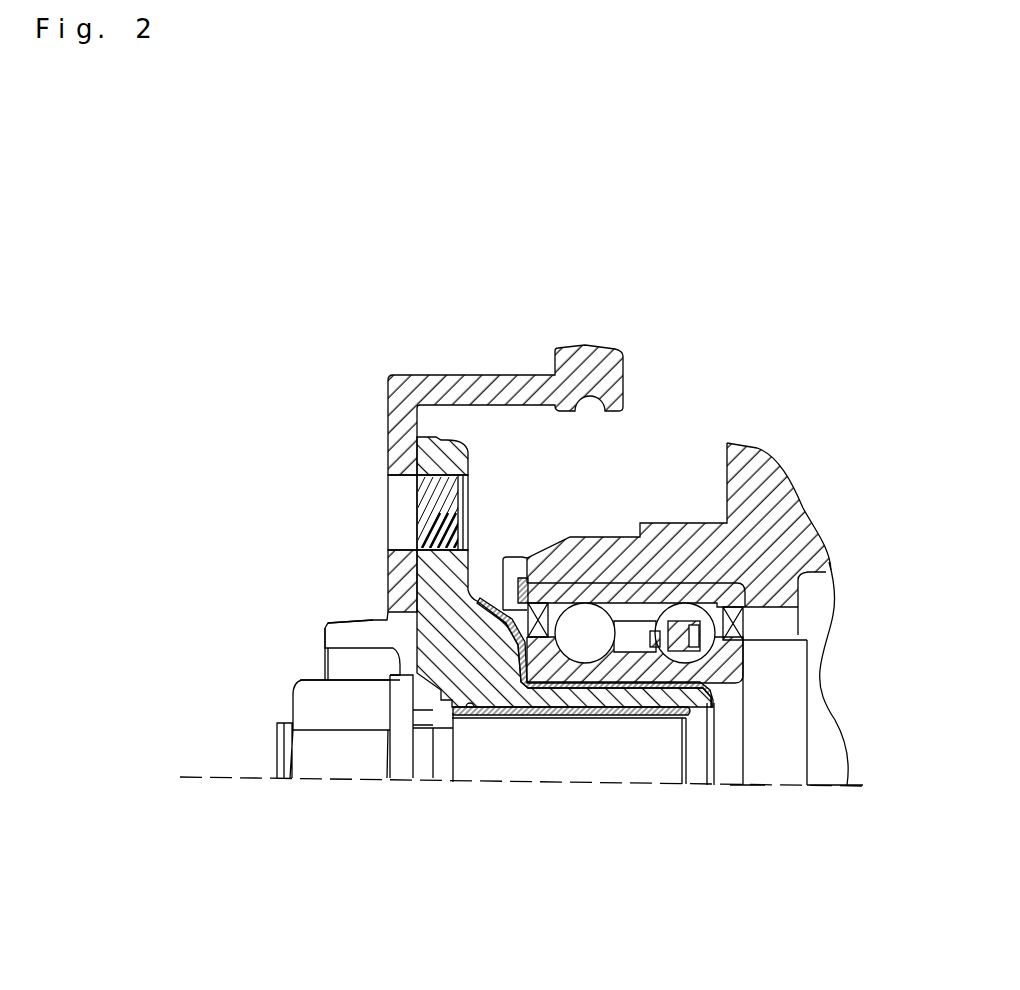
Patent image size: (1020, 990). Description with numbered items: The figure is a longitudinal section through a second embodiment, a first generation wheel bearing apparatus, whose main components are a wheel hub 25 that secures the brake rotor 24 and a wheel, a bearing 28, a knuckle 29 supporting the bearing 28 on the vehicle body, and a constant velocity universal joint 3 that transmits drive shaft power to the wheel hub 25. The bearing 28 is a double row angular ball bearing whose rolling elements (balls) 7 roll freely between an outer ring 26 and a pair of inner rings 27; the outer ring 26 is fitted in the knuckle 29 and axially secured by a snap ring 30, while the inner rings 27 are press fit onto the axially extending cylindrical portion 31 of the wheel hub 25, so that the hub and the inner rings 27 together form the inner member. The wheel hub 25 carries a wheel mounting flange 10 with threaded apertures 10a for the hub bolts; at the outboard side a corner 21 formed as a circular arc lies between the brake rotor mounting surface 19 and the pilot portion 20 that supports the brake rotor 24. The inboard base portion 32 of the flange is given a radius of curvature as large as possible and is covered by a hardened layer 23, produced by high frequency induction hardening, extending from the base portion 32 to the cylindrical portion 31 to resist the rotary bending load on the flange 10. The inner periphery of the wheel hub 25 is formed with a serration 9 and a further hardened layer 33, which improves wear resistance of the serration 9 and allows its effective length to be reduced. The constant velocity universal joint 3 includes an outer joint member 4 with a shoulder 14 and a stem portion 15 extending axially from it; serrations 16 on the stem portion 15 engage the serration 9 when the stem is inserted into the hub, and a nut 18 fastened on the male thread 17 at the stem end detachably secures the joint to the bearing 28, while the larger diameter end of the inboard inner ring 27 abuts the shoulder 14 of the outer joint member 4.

The constant velocity universal joint 3 is at (818, 645).
The outer joint member 4 is at (769, 717).
The rolling elements (balls) 7 is at (583, 652).
The serration 9 is at (517, 720).
The wheel mounting flange 10 is at (432, 447).
The threaded apertures 10a is at (413, 493).
The shoulder 14 is at (775, 753).
The stem portion 15 is at (485, 757).
The serrations (splines) 16 is at (463, 720).
The male thread 17 is at (287, 723).
The nut 18 is at (308, 778).
The brake rotor mounting surface 19 is at (413, 473).
The pilot portion 20 is at (350, 617).
The corner 21 is at (383, 607).
The hardened layer 23 is at (437, 714).
The brake rotor 24 is at (477, 375).
The wheel hub 25 is at (367, 637).
The outer ring (outer member) 26 is at (645, 588).
The inner rings 27 is at (562, 672).
The bearing 28 is at (279, 579).
The knuckle 29 is at (603, 545).
The snap ring 30 is at (523, 577).
The axially extending cylindrical portion 31 is at (698, 693).
The base portion 32 is at (403, 697).
The hardened layer 33 is at (556, 668).